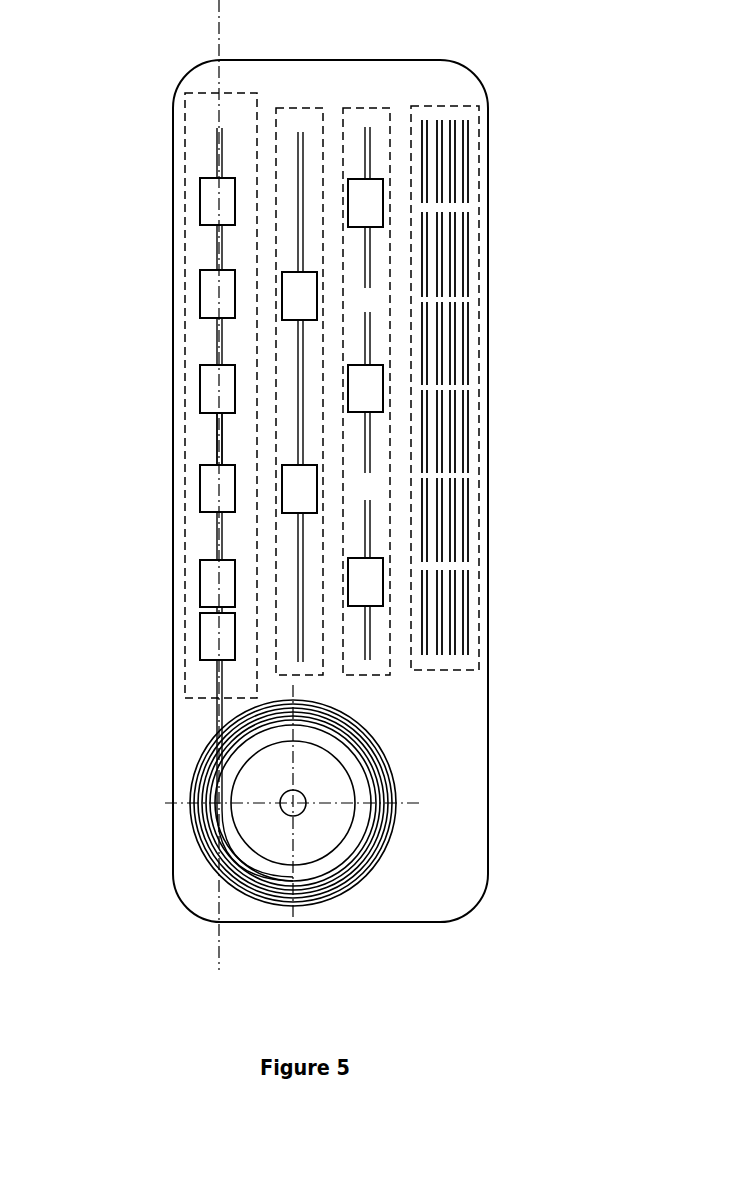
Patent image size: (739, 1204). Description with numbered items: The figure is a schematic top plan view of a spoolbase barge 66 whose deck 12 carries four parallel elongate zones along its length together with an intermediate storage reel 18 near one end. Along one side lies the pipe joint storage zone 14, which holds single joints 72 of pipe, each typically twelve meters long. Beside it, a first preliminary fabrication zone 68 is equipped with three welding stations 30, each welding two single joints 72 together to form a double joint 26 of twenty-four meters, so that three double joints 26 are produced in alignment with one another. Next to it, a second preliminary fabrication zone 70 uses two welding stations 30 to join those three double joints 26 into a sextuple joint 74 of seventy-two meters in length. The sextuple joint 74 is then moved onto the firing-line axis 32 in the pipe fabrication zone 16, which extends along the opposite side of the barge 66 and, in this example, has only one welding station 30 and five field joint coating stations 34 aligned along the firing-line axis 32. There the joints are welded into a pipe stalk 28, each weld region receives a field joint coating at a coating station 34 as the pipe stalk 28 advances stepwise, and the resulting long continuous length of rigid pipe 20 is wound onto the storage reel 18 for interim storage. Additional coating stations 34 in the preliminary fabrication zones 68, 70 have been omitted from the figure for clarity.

The deck 12 is at (188, 416).
The pipe joint storage zone 14 is at (480, 393).
The pipe fabrication zone 16 is at (185, 547).
The intermediate storage reel 18 is at (313, 843).
The rigid pipe 20 is at (208, 777).
The double pipe joint 26 is at (366, 152).
The pipe stalk 28 is at (217, 240).
The welding station 30 is at (220, 632).
The firing-line axis 32 is at (215, 50).
The coating station 34 is at (213, 200).
The barge 66 is at (138, 139).
The first preliminary fabrication zone 68 is at (367, 106).
The second preliminary fabrication zone 70 is at (298, 107).
The single joint 72 is at (465, 188).
The sextuple joint 74 is at (298, 355).